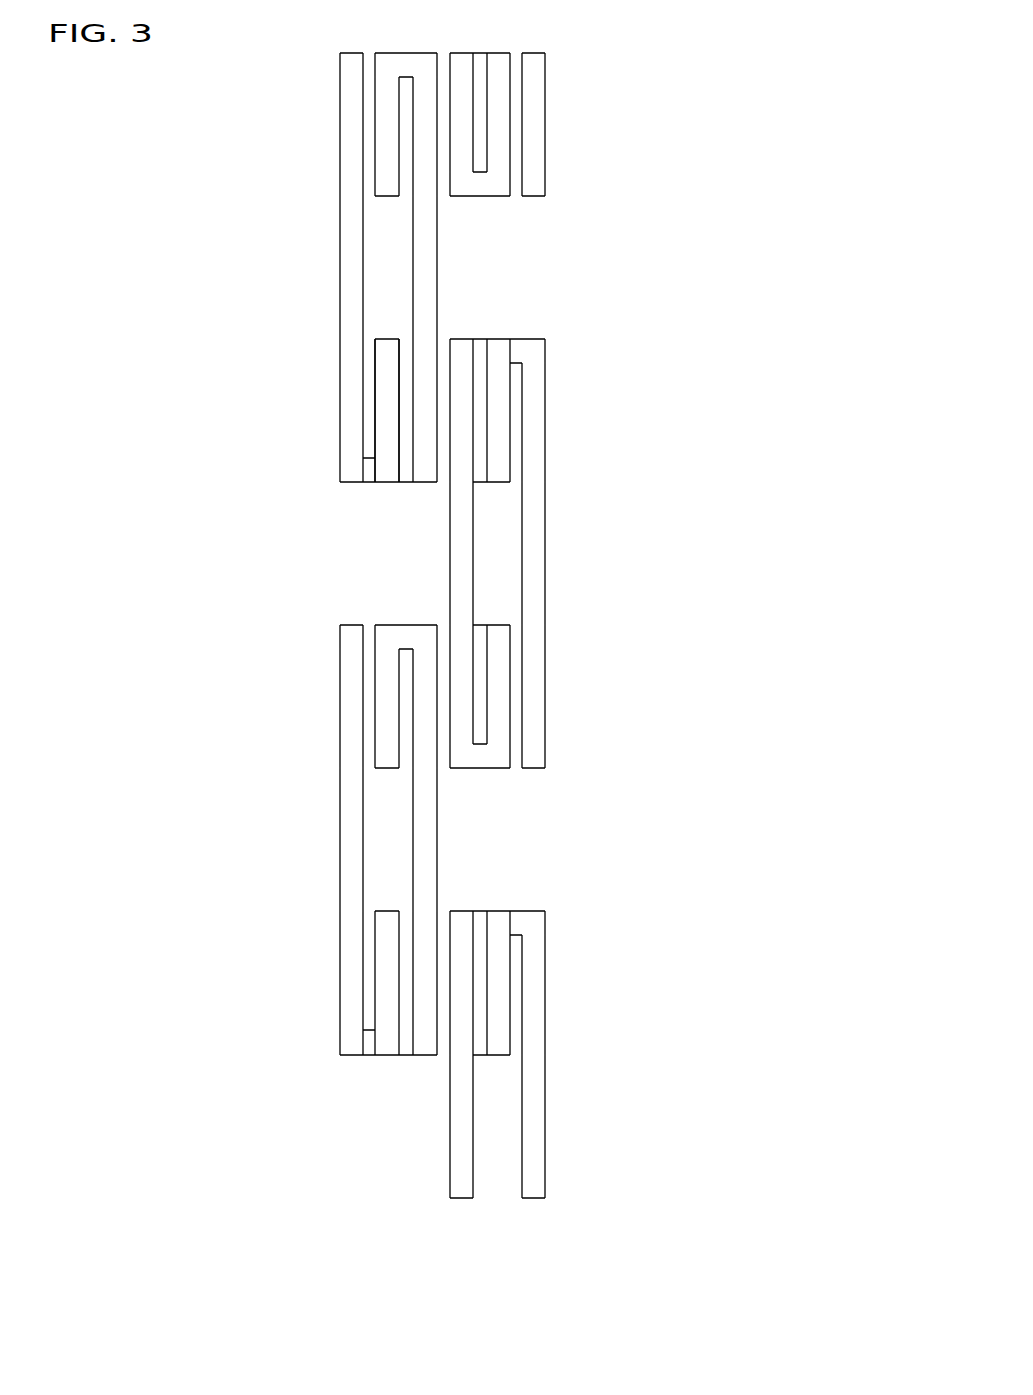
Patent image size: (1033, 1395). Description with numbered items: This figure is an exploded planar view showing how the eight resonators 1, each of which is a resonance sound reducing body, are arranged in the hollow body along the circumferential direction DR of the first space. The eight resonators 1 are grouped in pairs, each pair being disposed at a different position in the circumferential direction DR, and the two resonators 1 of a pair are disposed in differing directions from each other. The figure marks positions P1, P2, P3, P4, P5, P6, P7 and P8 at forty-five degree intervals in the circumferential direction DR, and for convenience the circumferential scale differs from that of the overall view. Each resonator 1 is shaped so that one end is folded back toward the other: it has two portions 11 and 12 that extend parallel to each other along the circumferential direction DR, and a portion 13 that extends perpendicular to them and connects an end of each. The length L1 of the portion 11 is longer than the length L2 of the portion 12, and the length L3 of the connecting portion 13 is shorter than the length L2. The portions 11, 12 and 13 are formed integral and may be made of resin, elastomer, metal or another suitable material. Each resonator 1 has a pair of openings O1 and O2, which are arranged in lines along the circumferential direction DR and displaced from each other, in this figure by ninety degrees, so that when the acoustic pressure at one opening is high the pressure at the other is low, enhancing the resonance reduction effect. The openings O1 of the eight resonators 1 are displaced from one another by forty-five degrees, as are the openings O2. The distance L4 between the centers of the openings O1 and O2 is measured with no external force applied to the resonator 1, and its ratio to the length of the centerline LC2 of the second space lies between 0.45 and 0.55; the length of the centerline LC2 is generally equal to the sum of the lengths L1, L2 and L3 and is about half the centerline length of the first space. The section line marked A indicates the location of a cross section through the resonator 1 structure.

The resonator 1 is at (445, 625).
The portion 11 is at (345, 232).
The portion 12 is at (380, 386).
The portion 13 is at (368, 476).
The opening O1 is at (352, 52).
The opening O2 is at (498, 53).
The length of the portion 11 L1 is at (387, 468).
The length of the portion 12 L2 is at (248, 340).
The length of the portion 13 L3 is at (352, 45).
The distance between the pair of openings L4 is at (387, 338).
The centerline of the second space LC2 is at (347, 402).
The circumferential direction DR is at (783, 338).
The section line A- A is at (592, 268).
The position P1 is at (644, 1198).
The position P2 is at (308, 196).
The position P3 is at (150, 339).
The position P4 is at (150, 482).
The position P5 is at (308, 625).
The position P6 is at (308, 768).
The position P7 is at (308, 911).
The position P8 is at (308, 1055).